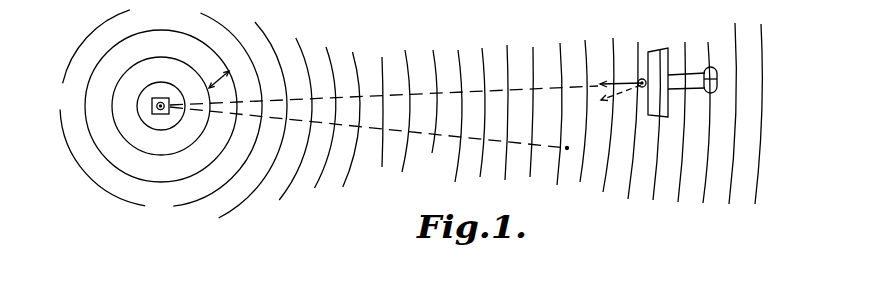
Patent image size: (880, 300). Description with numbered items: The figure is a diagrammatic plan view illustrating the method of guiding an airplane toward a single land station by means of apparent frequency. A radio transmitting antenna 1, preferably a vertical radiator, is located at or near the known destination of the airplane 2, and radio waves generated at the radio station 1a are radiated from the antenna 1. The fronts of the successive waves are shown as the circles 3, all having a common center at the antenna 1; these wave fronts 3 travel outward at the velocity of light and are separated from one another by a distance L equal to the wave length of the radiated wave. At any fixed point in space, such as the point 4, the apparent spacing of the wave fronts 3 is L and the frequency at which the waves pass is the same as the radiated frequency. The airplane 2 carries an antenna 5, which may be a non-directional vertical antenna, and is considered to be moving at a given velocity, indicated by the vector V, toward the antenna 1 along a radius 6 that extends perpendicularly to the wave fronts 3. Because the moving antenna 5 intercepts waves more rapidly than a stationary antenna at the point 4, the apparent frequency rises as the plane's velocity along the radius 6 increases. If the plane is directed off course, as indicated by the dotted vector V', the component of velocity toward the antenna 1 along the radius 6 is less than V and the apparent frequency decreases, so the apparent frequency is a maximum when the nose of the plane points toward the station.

The radio transmitting antenna 1 is at (159, 114).
The radio station 1a is at (163, 98).
The airplane 2 is at (667, 54).
The wave fronts 3 is at (352, 54).
The fixed point in space 4 is at (567, 148).
The antenna 5 is at (642, 79).
The radius 6 is at (424, 92).
The wave length L is at (217, 75).
The velocity vector V is at (621, 61).
The off-course velocity vector V' is at (621, 106).